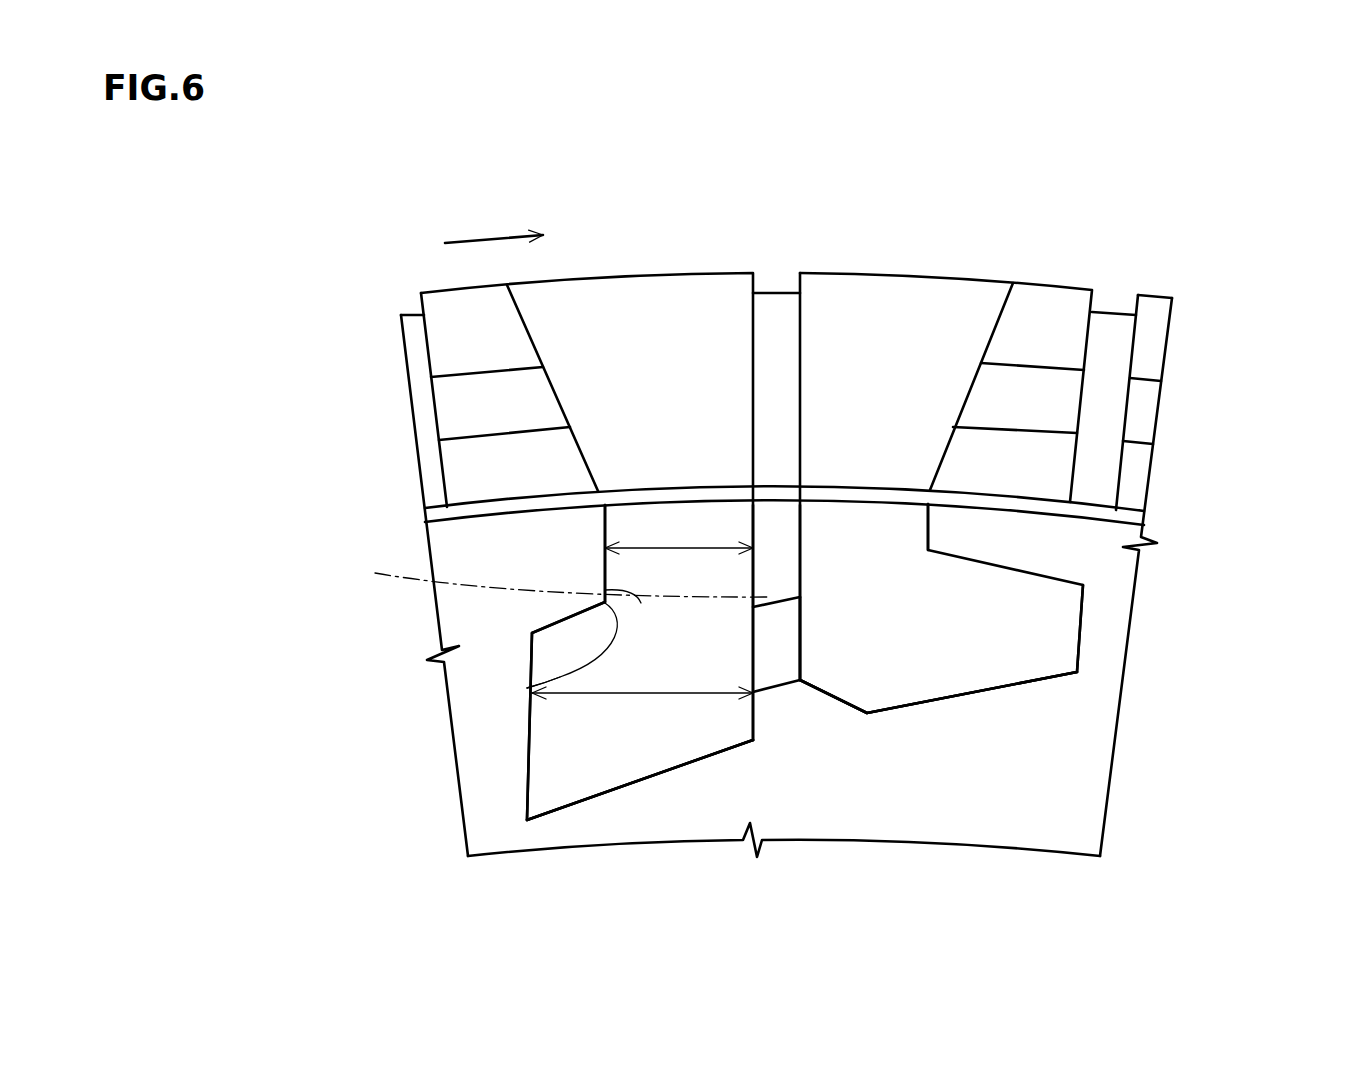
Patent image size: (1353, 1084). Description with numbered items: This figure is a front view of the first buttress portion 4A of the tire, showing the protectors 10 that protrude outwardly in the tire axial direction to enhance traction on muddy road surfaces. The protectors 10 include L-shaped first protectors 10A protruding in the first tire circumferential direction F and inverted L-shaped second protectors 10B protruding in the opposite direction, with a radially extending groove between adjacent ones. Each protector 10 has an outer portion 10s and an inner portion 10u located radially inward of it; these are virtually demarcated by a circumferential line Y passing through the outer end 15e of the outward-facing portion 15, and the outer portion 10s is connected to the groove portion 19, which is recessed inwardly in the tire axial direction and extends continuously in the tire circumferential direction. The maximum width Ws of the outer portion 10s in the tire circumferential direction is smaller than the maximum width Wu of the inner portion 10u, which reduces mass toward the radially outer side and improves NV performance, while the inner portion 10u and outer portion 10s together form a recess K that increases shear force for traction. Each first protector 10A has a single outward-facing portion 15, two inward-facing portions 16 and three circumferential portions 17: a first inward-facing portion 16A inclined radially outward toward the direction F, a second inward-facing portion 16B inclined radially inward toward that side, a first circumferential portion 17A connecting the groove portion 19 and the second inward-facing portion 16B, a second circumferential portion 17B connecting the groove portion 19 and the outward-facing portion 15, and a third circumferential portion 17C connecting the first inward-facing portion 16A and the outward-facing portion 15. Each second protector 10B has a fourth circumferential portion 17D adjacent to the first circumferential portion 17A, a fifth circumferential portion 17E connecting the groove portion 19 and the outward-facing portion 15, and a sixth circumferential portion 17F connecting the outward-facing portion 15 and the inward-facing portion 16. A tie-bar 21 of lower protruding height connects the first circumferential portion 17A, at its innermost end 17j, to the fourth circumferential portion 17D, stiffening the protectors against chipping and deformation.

The first buttress portion 4A is at (1192, 250).
The protector 10 is at (900, 192).
The first protector 10A is at (858, 478).
The second protector 10B is at (687, 478).
The outer portion 10s is at (632, 567).
The inner portion 10u is at (593, 740).
The outward-facing portion 15 is at (605, 603).
The outer end 15e is at (527, 688).
The inward-facing portion 16 is at (637, 783).
The first inward-facing portion 16A is at (1040, 679).
The second inward-facing portion 16B is at (833, 700).
The circumferential portion 17 is at (522, 778).
The first circumferential portion 17A is at (800, 538).
The second circumferential portion 17B is at (931, 527).
The third circumferential portion 17C is at (1083, 625).
The fourth circumferential portion 17D is at (753, 552).
The fifth circumferential portion 17E is at (603, 532).
The sixth circumferential portion 17F is at (527, 738).
The innermost end 17j is at (797, 672).
The groove portion 19 is at (1126, 515).
The tie-bar 21 is at (773, 705).
The first tire circumferential direction F is at (504, 234).
The recess K is at (560, 582).
The maximum width of the outer portion Ws is at (660, 548).
The maximum width of the inner portion Wu is at (527, 798).
The circumferential line Y is at (558, 577).